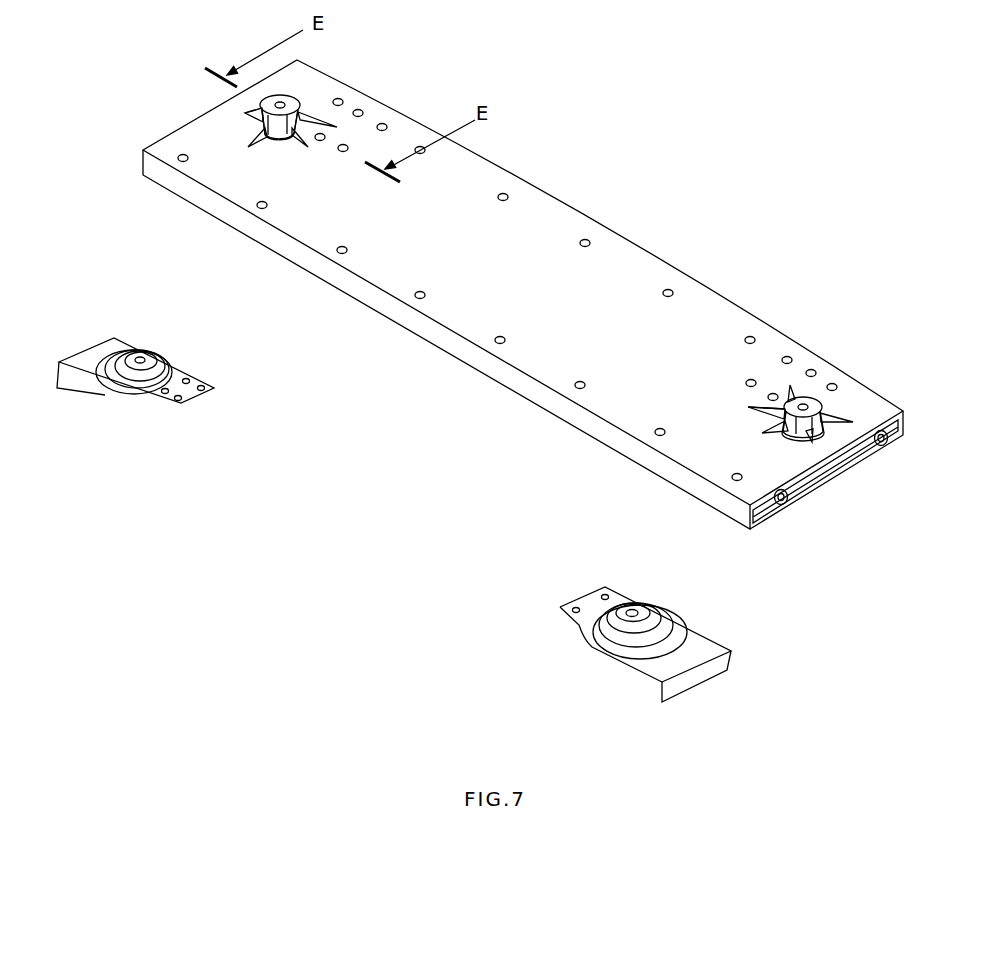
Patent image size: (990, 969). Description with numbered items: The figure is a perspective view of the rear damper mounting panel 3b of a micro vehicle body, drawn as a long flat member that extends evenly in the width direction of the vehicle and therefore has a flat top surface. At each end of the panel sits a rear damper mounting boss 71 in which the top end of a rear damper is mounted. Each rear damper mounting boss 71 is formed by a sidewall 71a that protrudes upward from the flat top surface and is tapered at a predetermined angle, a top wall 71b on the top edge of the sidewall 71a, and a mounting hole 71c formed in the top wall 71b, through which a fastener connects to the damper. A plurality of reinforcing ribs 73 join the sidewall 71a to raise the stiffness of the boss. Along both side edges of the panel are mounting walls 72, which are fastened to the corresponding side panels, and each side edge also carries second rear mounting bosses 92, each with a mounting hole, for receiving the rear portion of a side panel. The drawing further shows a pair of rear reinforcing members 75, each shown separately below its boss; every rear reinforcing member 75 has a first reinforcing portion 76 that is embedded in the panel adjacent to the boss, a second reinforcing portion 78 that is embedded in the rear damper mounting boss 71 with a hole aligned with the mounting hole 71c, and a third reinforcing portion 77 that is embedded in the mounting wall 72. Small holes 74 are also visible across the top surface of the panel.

The rear damper mounting panel 3b is at (618, 284).
The rear damper mounting boss 71 is at (311, 89).
The sidewall 71a is at (280, 128).
The top wall 71b is at (258, 108).
The mounting hole 71c is at (273, 107).
The mounting wall 72 is at (818, 462).
The reinforcing rib 73 is at (263, 128).
The holes 74 is at (358, 110).
The rear reinforcing member 75 is at (392, 512).
The first reinforcing portion 76 is at (193, 383).
The third reinforcing portion 77 is at (67, 379).
The second reinforcing portion 78 is at (147, 343).
The second rear mounting boss 92 is at (888, 442).